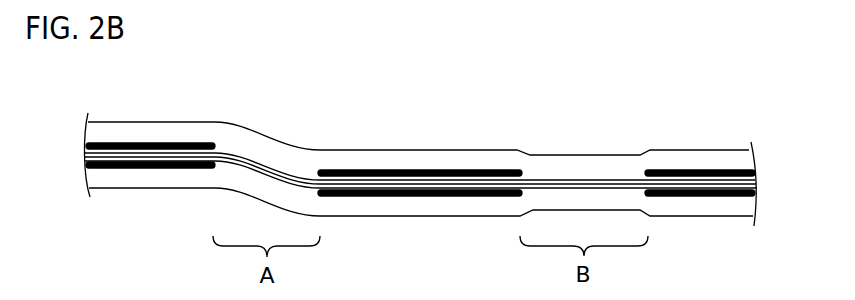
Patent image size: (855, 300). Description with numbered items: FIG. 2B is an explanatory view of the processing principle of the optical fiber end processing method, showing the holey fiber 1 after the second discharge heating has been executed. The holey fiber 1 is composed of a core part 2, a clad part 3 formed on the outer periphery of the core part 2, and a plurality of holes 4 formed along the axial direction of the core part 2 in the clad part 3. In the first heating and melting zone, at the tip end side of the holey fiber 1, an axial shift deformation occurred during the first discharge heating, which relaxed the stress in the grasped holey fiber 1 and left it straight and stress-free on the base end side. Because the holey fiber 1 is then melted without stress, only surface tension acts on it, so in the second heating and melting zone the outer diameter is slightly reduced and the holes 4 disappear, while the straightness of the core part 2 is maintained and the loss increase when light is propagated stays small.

The holey fiber 1 is at (420, 171).
The core part 2 is at (582, 178).
The clad part 3 is at (467, 158).
The holes 4 is at (335, 170).